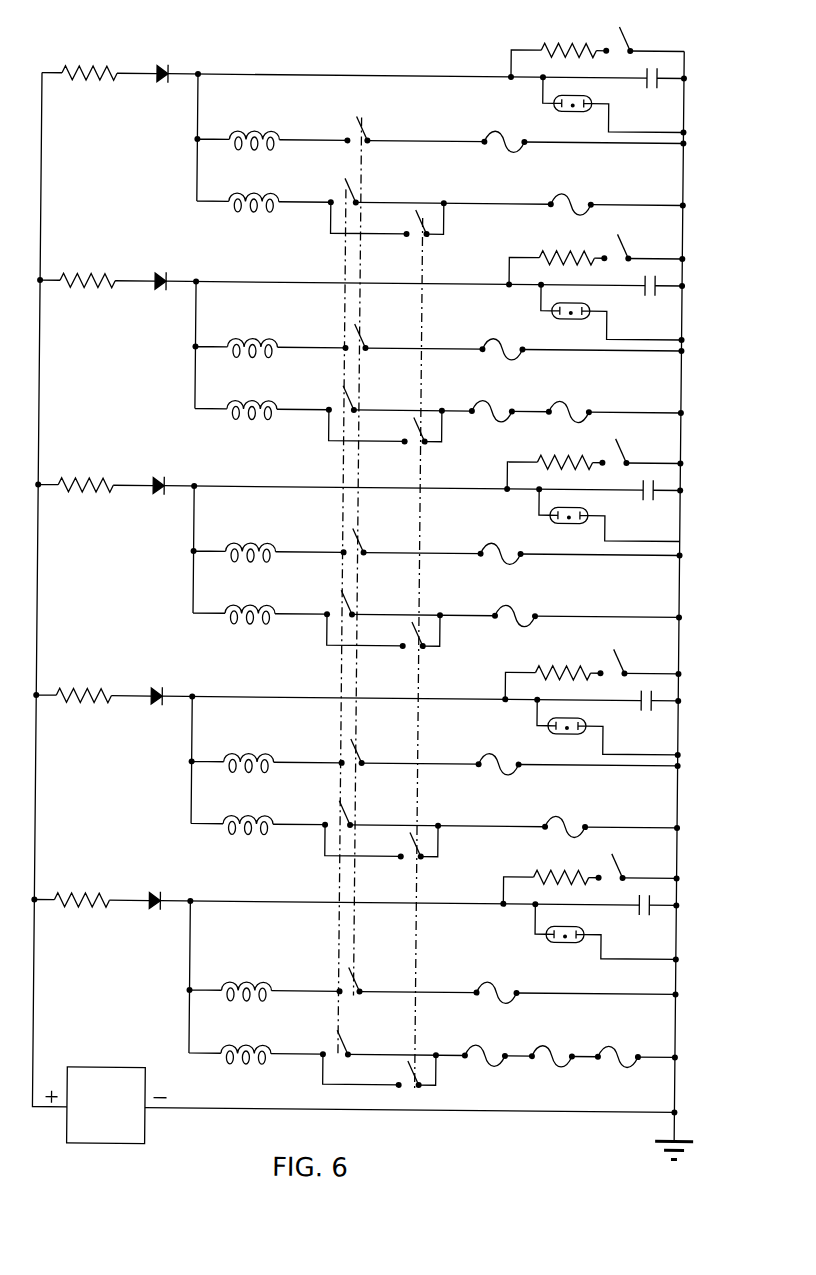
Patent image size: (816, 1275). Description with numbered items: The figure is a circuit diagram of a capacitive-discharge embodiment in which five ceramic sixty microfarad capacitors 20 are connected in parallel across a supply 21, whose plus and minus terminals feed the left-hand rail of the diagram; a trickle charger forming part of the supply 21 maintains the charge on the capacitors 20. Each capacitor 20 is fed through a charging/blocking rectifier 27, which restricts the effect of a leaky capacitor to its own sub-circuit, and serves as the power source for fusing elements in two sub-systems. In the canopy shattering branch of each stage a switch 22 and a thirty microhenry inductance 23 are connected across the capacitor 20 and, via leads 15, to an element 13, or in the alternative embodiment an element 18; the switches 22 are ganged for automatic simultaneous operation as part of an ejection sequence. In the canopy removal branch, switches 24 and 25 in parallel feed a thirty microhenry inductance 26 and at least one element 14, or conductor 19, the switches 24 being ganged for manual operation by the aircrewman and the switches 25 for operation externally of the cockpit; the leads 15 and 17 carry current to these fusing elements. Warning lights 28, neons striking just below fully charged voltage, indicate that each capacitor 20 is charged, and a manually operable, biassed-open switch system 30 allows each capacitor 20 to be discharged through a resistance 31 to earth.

The element 13 is at (493, 558).
The element 14 is at (557, 636).
The leads 15 is at (498, 617).
The heating element 17 is at (453, 203).
The element 18 is at (452, 160).
The conductor 19 is at (576, 200).
The capacitor 20 is at (655, 80).
The supply 21 is at (119, 1120).
The switch 22 is at (363, 127).
The inductance 23 is at (257, 132).
The switch 24 is at (344, 187).
The switch 25 is at (419, 236).
The inductance 26 is at (264, 196).
The charging/blocking rectifier 27 is at (172, 82).
The warning light 28 is at (553, 113).
The switch system 30 is at (627, 34).
The resistance 31 is at (568, 38).